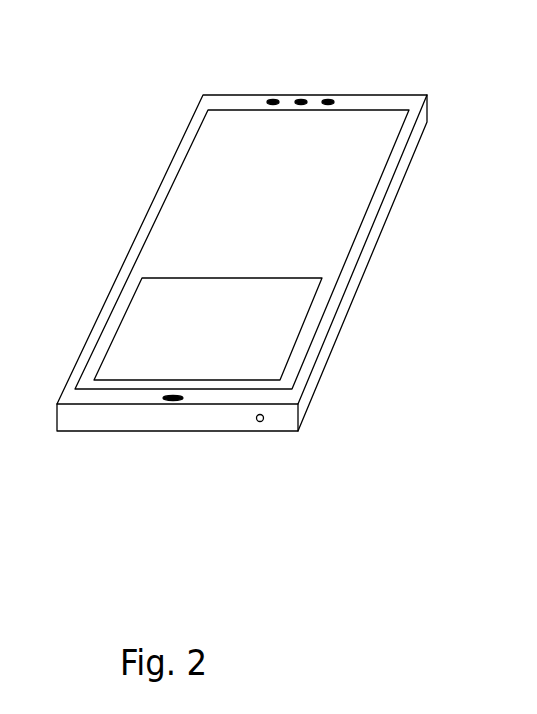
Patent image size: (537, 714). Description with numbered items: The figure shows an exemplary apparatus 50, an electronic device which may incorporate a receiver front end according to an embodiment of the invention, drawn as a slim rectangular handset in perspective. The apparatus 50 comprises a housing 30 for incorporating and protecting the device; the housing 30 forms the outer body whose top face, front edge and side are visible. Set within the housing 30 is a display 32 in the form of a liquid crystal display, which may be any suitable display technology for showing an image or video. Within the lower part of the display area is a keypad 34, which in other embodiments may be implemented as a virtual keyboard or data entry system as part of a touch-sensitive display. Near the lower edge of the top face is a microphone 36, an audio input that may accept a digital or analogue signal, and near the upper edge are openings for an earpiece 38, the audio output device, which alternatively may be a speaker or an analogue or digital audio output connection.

The apparatus 50 is at (449, 63).
The housing 30 is at (213, 94).
The display 32 is at (348, 194).
The keypad 34 is at (287, 344).
The microphone 36 is at (174, 401).
The earpiece 38 is at (297, 100).